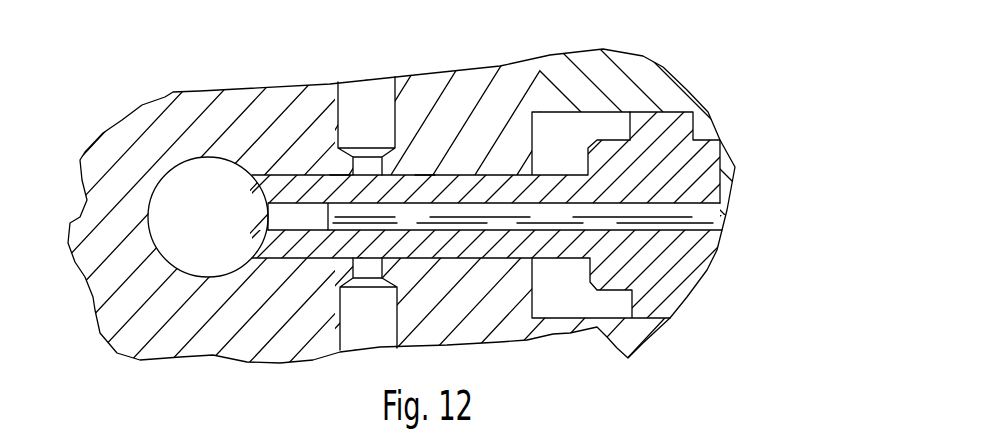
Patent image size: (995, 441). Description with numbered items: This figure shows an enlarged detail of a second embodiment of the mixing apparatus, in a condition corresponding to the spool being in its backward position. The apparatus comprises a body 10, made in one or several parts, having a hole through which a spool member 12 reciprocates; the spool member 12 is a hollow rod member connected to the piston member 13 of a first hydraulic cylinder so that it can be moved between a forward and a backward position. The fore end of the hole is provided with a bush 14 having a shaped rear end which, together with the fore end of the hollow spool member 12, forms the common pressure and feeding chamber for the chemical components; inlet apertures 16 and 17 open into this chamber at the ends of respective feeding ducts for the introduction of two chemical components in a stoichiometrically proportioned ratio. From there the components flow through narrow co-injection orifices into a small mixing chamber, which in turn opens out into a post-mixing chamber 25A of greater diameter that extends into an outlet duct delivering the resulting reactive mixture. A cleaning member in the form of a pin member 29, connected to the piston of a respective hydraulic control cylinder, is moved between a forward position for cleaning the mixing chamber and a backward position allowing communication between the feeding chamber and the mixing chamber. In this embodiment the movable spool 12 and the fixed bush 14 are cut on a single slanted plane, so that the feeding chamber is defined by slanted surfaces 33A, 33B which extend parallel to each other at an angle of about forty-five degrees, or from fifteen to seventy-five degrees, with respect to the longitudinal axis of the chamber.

The body 10 is at (110, 172).
The spool member 12 is at (483, 195).
The piston member 13 is at (665, 145).
The bush 14 is at (287, 247).
The inlet aperture 16 is at (343, 350).
The inlet aperture 17 is at (371, 165).
The post-mixing chamber 25A is at (210, 225).
The pin member 29 is at (478, 212).
The slanted surface 33A is at (340, 200).
The slanted surface 33B is at (425, 197).